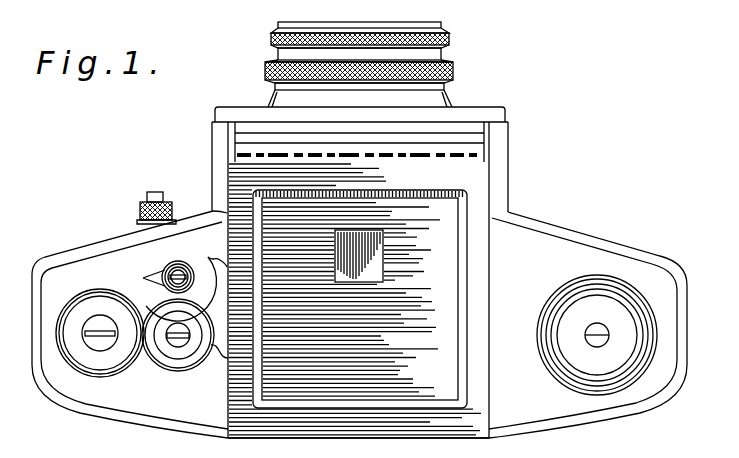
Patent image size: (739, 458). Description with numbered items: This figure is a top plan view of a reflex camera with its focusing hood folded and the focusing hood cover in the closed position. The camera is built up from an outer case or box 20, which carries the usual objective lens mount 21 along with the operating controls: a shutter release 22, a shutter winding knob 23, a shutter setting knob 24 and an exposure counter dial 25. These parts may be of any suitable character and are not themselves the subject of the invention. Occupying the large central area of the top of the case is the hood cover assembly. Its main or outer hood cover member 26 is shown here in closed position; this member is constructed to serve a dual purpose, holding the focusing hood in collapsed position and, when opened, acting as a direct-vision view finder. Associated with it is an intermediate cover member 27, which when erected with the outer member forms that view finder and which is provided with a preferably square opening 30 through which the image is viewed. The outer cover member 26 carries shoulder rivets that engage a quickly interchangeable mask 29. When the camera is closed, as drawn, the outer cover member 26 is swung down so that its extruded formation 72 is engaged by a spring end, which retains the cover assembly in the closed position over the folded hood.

The outer case or box 20 is at (557, 227).
The objective lens mount 21 is at (454, 70).
The shutter release 22 is at (156, 192).
The shutter winding knob 23 is at (103, 365).
The shutter setting knob 24 is at (182, 356).
The exposure counter dial 25 is at (635, 365).
The main or outer hood cover member 26 is at (462, 311).
The intermediate cover member 27 is at (452, 253).
The mask 29 is at (460, 282).
The square opening 30 is at (377, 240).
The extruded formation 72 is at (372, 441).